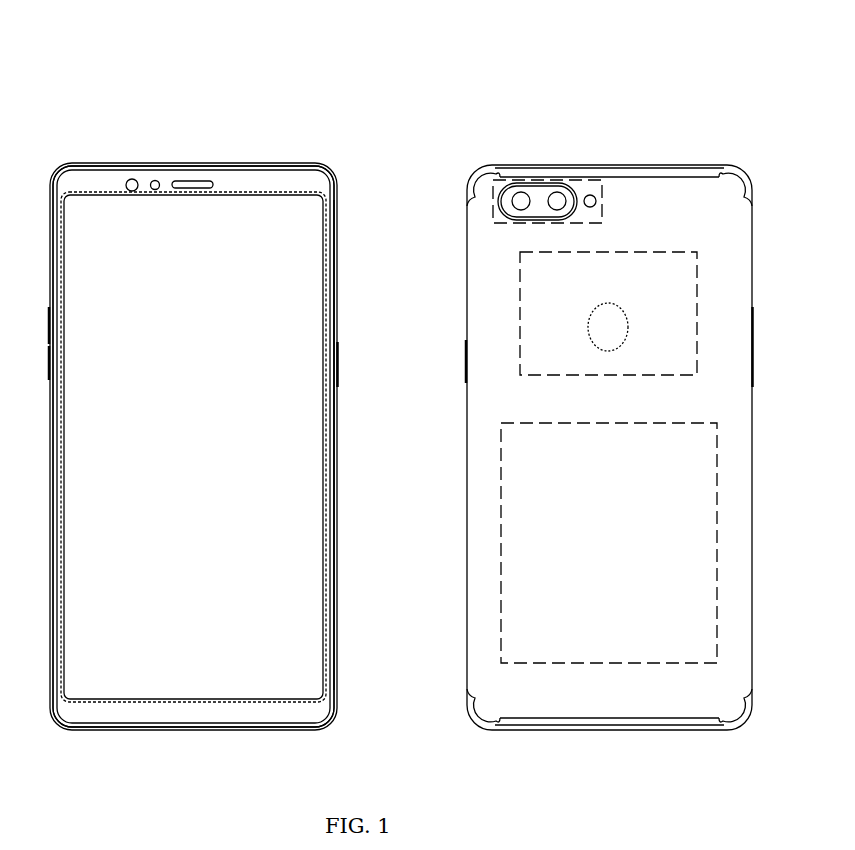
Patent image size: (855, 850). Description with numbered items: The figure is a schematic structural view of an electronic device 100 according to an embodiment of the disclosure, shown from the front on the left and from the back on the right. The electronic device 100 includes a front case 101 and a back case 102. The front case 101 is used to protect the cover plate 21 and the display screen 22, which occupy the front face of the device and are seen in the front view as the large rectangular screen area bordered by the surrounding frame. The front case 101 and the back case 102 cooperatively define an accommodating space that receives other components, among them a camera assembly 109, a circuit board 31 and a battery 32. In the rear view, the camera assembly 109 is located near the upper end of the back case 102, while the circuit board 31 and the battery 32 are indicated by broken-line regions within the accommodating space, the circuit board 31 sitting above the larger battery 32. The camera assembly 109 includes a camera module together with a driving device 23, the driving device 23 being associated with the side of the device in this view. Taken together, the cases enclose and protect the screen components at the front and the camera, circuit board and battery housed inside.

The electronic device 100 is at (201, 368).
The front case 101 is at (93, 182).
The back case 102 is at (675, 195).
The cover plate 21 is at (279, 175).
The display screen 22 is at (203, 240).
The driving device 23 is at (326, 240).
The camera assembly 109 is at (585, 183).
The circuit board 31 is at (685, 312).
The battery 32 is at (686, 510).